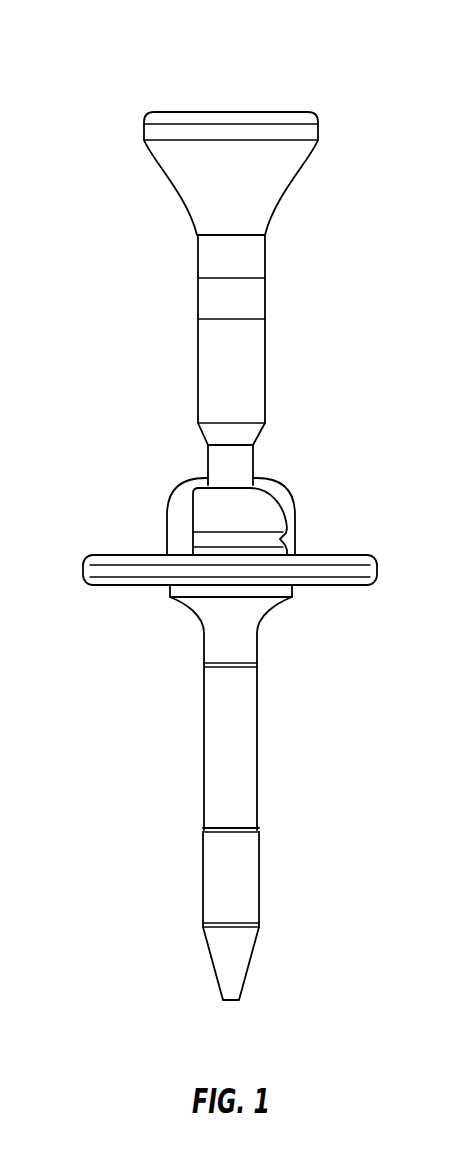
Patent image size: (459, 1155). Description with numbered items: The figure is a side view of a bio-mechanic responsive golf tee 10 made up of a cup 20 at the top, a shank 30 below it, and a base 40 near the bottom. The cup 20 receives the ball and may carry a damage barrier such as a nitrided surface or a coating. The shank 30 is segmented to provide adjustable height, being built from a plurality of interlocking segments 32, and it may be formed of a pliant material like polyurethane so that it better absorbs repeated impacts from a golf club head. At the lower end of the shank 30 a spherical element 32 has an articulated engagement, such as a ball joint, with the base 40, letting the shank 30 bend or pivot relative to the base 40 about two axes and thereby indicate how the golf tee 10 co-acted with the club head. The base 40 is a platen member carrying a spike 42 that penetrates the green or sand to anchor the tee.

The golf tee 10 is at (128, 50).
The cup 20 is at (314, 152).
The shank 30 is at (255, 258).
The interlocking segments 32 is at (255, 300).
The base 40 is at (257, 637).
The spike 42 is at (257, 870).